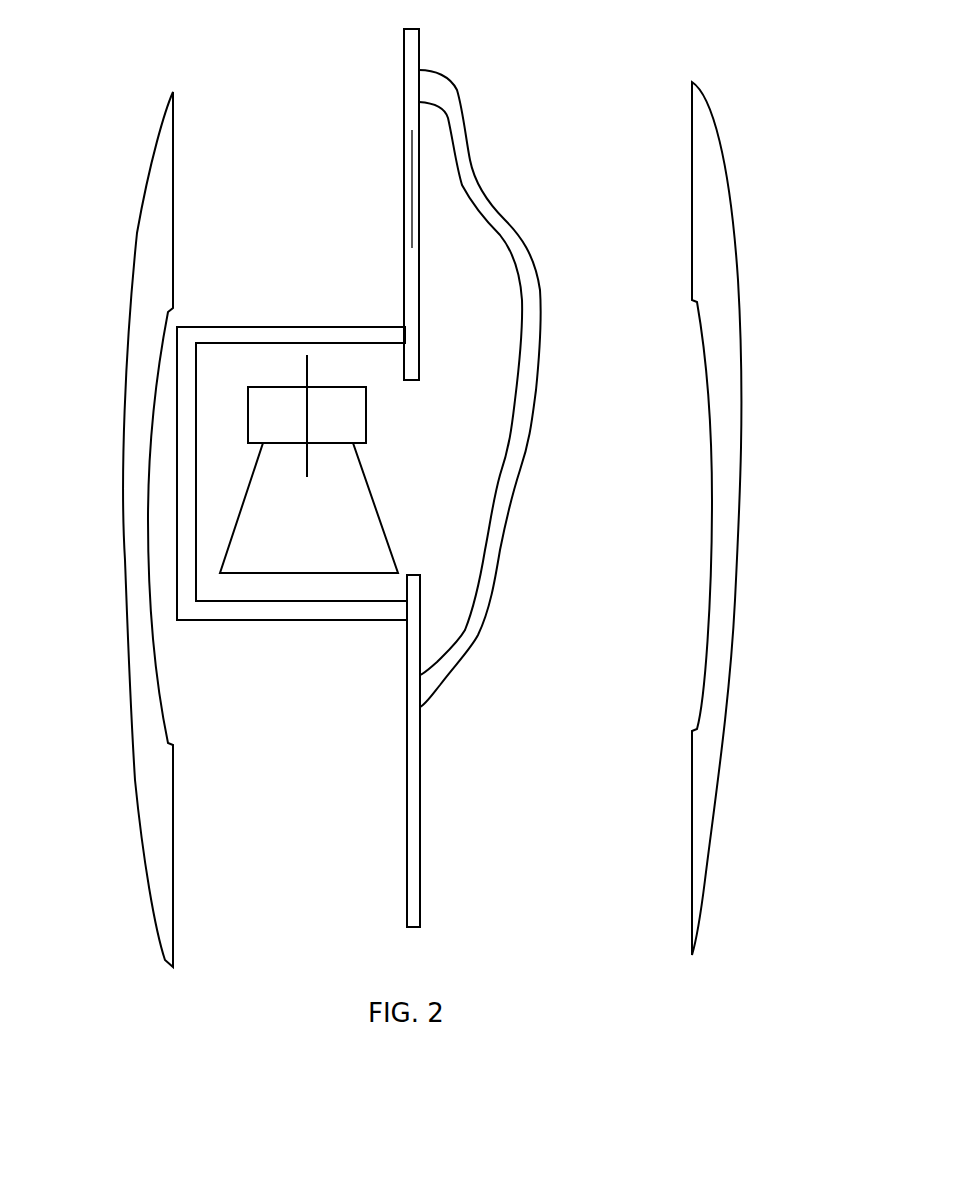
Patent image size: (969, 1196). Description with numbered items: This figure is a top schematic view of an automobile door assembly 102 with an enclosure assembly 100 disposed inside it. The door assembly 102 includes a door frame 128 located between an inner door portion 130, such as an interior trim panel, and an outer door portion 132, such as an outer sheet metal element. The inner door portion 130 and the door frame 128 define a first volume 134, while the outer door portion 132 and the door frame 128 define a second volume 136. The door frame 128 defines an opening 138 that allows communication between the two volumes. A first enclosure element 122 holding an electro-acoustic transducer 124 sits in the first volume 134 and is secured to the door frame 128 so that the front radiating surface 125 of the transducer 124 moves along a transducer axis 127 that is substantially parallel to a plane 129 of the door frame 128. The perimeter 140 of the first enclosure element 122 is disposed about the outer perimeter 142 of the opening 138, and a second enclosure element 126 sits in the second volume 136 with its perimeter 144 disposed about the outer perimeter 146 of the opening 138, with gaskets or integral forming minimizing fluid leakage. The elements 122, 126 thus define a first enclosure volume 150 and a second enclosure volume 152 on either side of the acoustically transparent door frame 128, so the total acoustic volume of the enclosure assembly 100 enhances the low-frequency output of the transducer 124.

The enclosure assembly 100 is at (272, 240).
The automobile door assembly 102 is at (112, 180).
The first enclosure element 122 is at (280, 622).
The electro-acoustic transducer 124 is at (375, 507).
The front radiating surface 125 is at (326, 581).
The second enclosure element 126 is at (540, 296).
The transducer axis 127 is at (305, 375).
The door frame 128 is at (420, 797).
The plane of the door frame 129 is at (412, 192).
The inner door portion 130 is at (137, 237).
The outer door portion 132 is at (692, 177).
The first volume 134 is at (309, 861).
The second volume 136 is at (587, 861).
The opening 138 is at (398, 408).
The perimeter of the first enclosure element 140 is at (386, 326).
The outer perimeter of the opening 142 is at (422, 335).
The perimeter of the second enclosure element 144 is at (425, 80).
The perimeter of the opening 146 is at (405, 90).
The first enclosure volume 150 is at (244, 377).
The second enclosure volume 152 is at (476, 269).